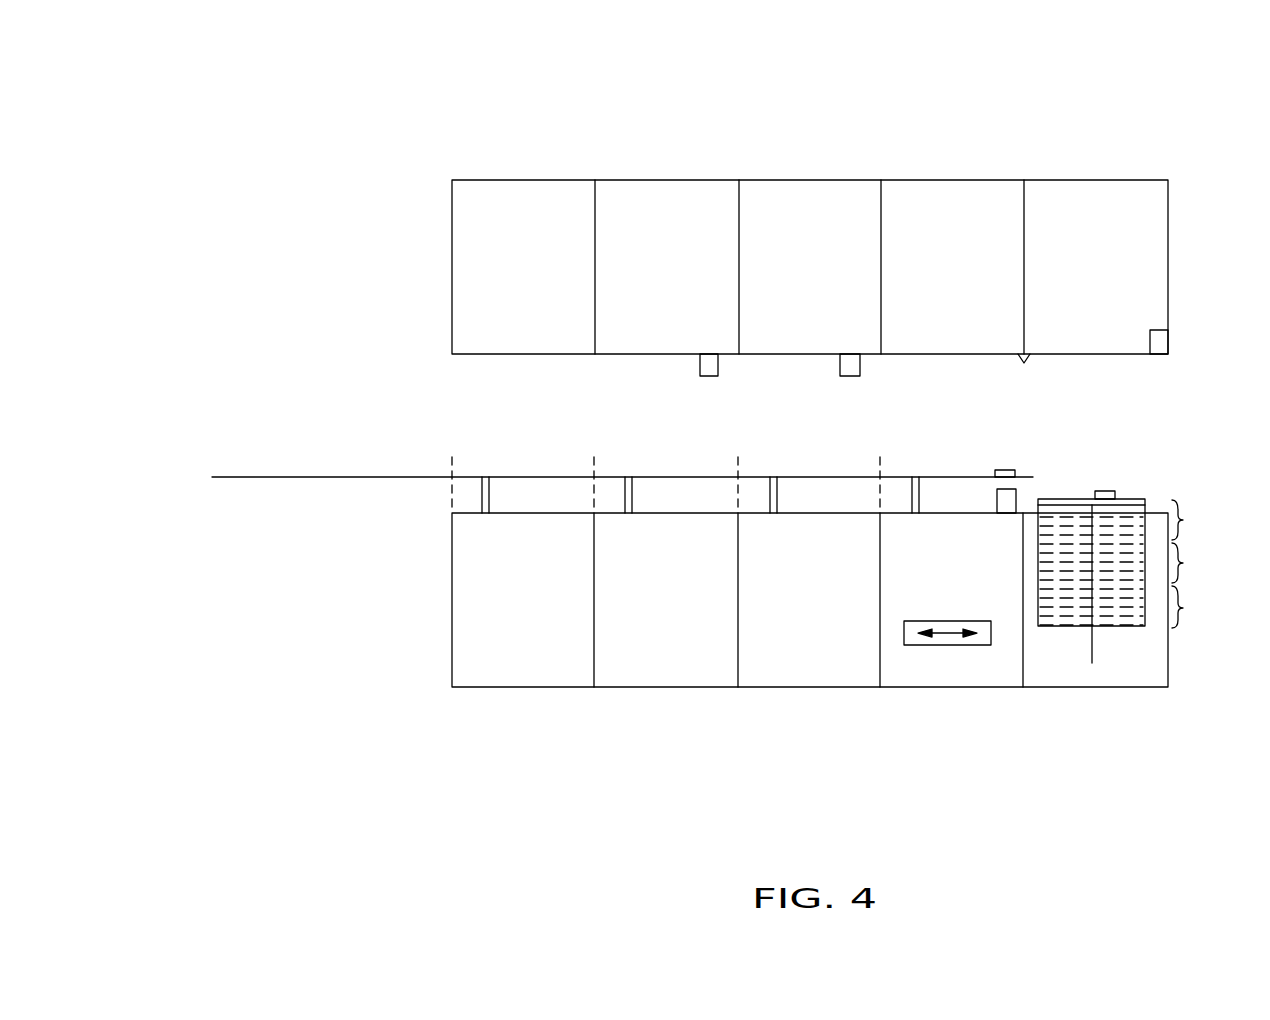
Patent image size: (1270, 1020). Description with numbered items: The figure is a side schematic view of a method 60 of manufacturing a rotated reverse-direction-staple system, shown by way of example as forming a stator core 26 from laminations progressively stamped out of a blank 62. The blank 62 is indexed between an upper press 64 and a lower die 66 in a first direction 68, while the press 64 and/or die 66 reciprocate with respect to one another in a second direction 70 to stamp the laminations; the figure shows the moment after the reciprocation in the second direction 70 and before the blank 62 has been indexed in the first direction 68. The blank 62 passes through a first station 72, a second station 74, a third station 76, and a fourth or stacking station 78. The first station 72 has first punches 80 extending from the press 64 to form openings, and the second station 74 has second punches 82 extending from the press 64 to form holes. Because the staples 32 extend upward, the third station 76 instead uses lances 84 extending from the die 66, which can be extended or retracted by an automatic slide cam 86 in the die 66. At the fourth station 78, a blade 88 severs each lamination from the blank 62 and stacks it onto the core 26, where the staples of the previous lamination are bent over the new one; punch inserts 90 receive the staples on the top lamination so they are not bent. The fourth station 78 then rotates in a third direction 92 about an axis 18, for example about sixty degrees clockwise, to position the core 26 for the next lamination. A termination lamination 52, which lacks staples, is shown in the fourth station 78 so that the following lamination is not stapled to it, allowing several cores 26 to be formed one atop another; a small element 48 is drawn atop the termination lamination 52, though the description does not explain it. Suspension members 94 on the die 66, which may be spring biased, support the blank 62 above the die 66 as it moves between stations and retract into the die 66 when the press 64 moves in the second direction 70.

The method 60 is at (975, 101).
The press 64 is at (1168, 180).
The die 66 is at (1168, 687).
The blank 62 is at (231, 476).
The first direction 68 is at (314, 454).
The second direction 70 is at (381, 353).
The first station 72 is at (660, 687).
The second station 74 is at (802, 687).
The third station 76 is at (945, 687).
The fourth station 78 is at (1087, 687).
The first punches 80 is at (709, 376).
The second punches 82 is at (850, 376).
The lances 84 is at (1008, 500).
The automatic slide cam 86 is at (950, 645).
The blade 88 is at (1024, 363).
The punch inserts 90 is at (1155, 330).
The third direction 92 is at (1041, 812).
The suspension members 94 is at (489, 497).
The staples 32 is at (1002, 470).
The top element 48 is at (1102, 491).
The termination lamination 52 is at (1052, 499).
The axis 18 is at (1095, 642).
The stator core 26 is at (1195, 564).